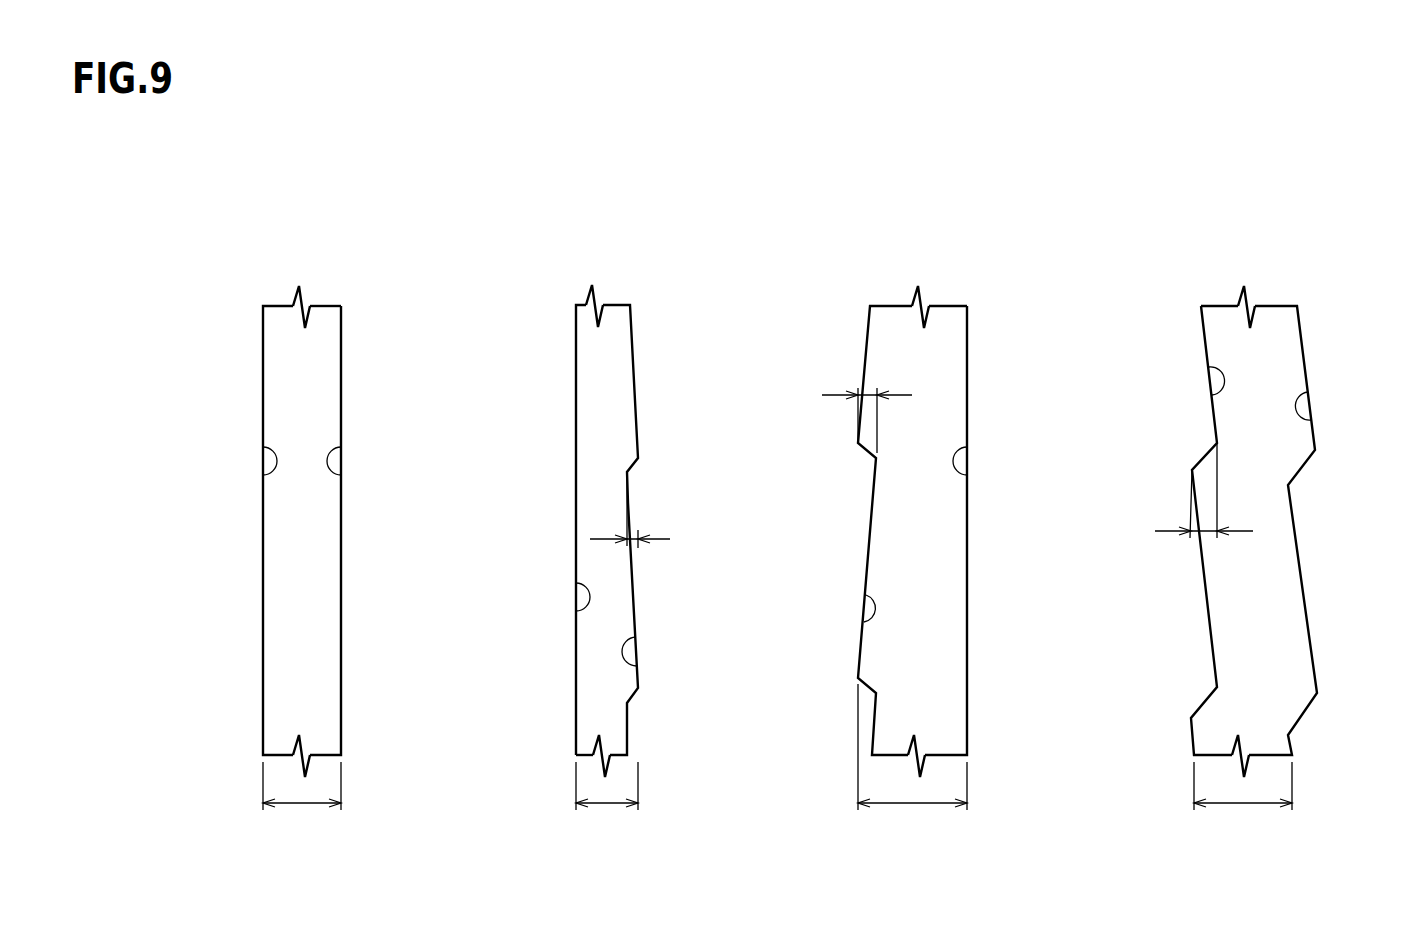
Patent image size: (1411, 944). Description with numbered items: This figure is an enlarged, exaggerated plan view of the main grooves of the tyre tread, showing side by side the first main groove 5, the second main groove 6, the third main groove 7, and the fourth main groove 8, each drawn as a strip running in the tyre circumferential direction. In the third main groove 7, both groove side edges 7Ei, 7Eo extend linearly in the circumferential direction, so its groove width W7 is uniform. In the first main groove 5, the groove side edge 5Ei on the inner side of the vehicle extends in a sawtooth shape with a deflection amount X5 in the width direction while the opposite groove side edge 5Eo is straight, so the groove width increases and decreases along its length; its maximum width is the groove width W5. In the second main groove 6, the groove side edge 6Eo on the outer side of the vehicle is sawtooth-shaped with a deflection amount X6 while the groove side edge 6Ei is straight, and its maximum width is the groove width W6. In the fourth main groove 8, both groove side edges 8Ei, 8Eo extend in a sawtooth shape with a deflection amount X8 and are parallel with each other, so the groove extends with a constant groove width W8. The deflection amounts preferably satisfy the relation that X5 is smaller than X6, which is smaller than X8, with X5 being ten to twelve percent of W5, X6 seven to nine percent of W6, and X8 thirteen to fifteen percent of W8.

The first main groove 5 is at (612, 347).
The second main groove 6 is at (941, 347).
The third main groove 7 is at (319, 347).
The fourth main groove 8 is at (1273, 347).
The groove side edge 5Eo is at (579, 610).
The groove side edge 5Ei is at (634, 664).
The groove side edge 6Eo is at (865, 620).
The groove side edge 6Ei is at (964, 474).
The groove side edge 7Eo is at (268, 474).
The groove side edge 7Ei is at (337, 474).
The groove side edge 8Eo is at (1212, 393).
The groove side edge 8Ei is at (1309, 424).
The deflection amount X5 is at (633, 542).
The deflection amount X6 is at (869, 393).
The deflection amount X8 is at (1210, 535).
The groove width W5 is at (607, 801).
The groove width W6 is at (912, 762).
The groove width W7 is at (302, 801).
The groove width W8 is at (1243, 801).